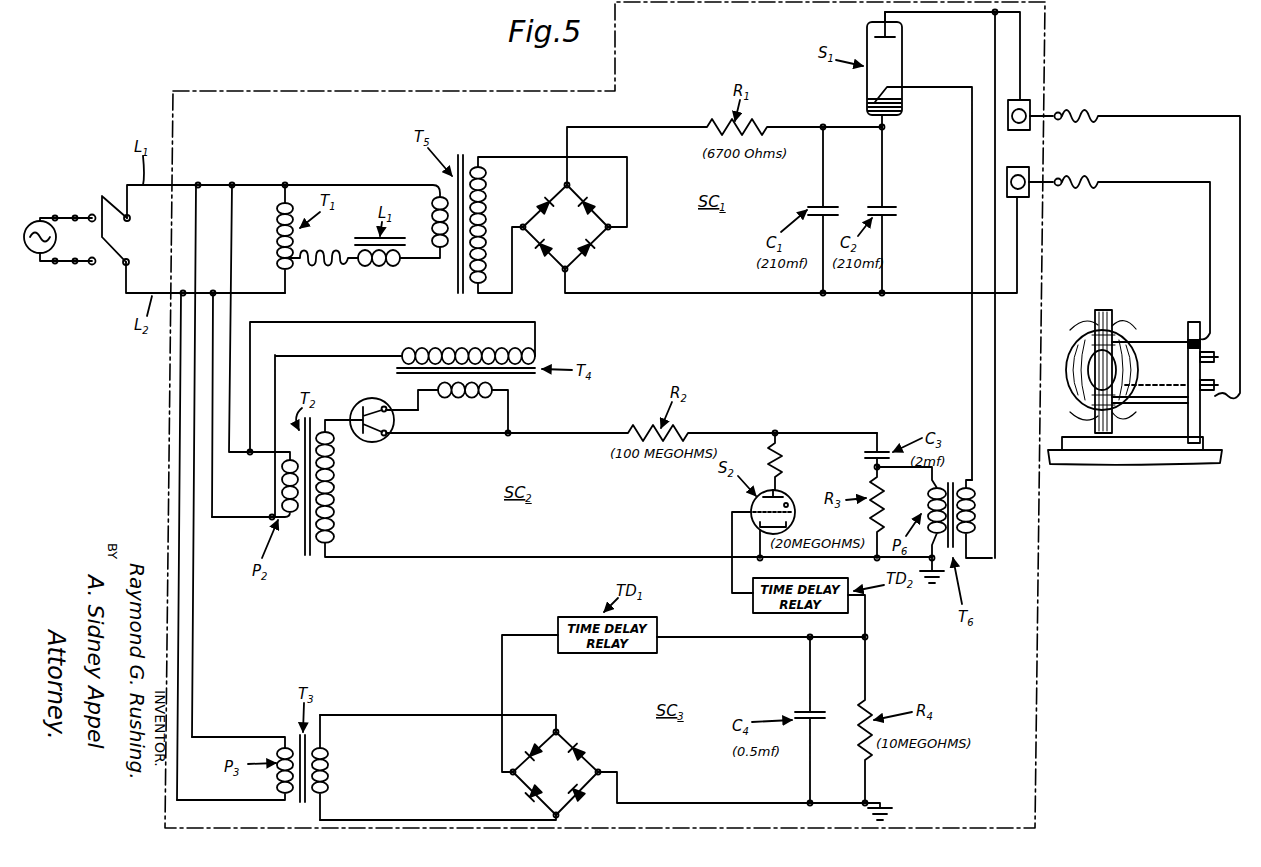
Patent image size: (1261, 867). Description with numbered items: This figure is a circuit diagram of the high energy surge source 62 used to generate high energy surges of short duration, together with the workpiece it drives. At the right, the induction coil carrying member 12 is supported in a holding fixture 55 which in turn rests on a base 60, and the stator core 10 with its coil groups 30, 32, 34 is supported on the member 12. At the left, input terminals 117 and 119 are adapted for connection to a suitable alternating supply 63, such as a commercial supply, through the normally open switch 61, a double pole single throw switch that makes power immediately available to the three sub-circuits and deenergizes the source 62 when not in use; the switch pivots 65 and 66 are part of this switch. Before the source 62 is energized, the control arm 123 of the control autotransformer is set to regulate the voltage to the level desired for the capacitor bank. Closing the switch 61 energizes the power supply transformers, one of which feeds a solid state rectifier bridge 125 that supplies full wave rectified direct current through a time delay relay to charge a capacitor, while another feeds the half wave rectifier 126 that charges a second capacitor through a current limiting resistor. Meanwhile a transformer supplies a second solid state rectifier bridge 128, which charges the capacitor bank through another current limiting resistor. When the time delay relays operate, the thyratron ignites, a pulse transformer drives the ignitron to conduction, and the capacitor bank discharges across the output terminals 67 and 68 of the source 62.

The stator core 10 is at (1114, 308).
The induction coil carrying member 12 is at (1152, 338).
The coil group 30 is at (1084, 330).
The coil group 32 is at (1140, 374).
The coil group 34 is at (1070, 410).
The holding fixture 55 is at (1205, 421).
The base 60 is at (1205, 445).
The normally open switch 61 is at (112, 196).
The high energy surge source 62 is at (1042, 517).
The alternating supply 63 is at (40, 258).
The switch pivot 65 is at (131, 216).
The switch pivot 66 is at (130, 259).
The output terminal 67 is at (1019, 100).
The output terminal 68 is at (1017, 167).
The input terminal 117 is at (97, 216).
The input terminal 119 is at (92, 265).
The control arm 123 is at (290, 261).
The solid state rectifier bridge 125 is at (592, 756).
The half wave rectifier 126 is at (372, 446).
The solid state rectifier bridge 128 is at (601, 244).